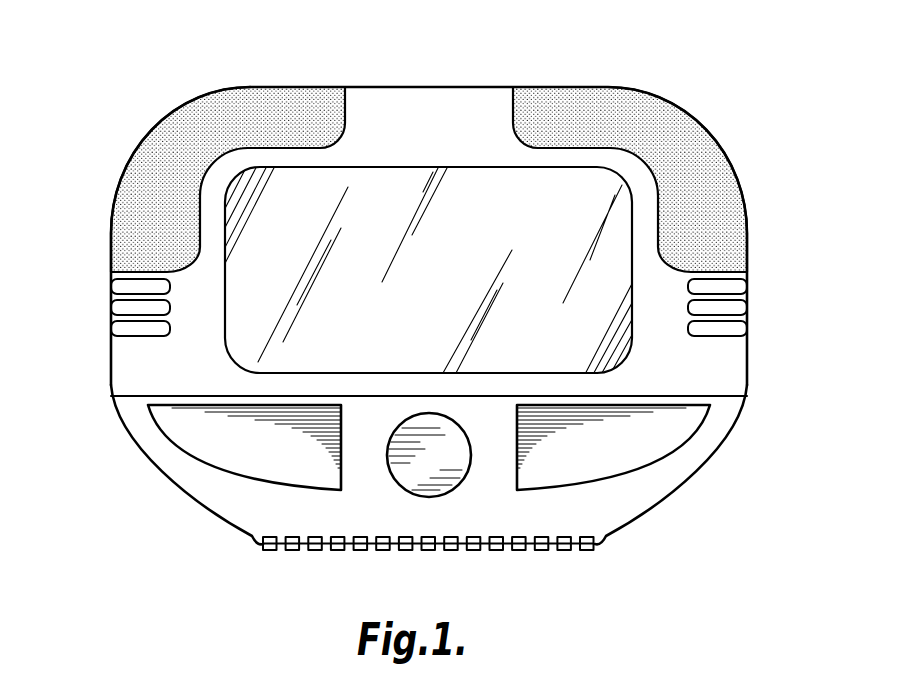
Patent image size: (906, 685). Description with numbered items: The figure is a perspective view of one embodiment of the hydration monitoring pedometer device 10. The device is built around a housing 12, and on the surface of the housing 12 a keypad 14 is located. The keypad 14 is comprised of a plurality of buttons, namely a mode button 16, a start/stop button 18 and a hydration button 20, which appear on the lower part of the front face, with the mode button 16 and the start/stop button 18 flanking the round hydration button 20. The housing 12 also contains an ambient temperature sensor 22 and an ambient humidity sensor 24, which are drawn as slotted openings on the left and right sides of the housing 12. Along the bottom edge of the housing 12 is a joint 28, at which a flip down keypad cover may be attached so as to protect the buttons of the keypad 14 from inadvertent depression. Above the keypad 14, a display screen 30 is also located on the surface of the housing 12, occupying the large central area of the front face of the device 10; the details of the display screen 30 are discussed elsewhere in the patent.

The hydration monitoring pedometer device 10 is at (736, 72).
The housing 12 is at (448, 138).
The keypad 14 is at (377, 485).
The mode button 16 is at (190, 445).
The start/stop button 18 is at (662, 452).
The hydration button 20 is at (462, 468).
The ambient temperature sensor 22 is at (111, 306).
The ambient humidity sensor 24 is at (747, 306).
The joint 28 is at (457, 550).
The display screen 30 is at (297, 175).